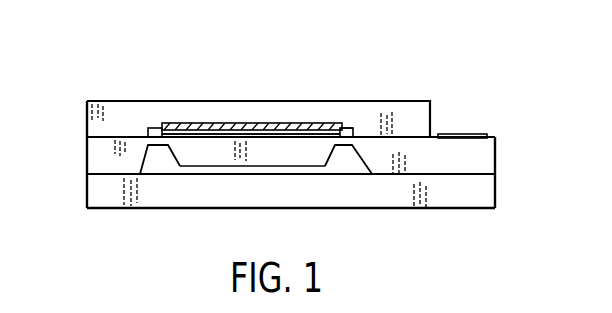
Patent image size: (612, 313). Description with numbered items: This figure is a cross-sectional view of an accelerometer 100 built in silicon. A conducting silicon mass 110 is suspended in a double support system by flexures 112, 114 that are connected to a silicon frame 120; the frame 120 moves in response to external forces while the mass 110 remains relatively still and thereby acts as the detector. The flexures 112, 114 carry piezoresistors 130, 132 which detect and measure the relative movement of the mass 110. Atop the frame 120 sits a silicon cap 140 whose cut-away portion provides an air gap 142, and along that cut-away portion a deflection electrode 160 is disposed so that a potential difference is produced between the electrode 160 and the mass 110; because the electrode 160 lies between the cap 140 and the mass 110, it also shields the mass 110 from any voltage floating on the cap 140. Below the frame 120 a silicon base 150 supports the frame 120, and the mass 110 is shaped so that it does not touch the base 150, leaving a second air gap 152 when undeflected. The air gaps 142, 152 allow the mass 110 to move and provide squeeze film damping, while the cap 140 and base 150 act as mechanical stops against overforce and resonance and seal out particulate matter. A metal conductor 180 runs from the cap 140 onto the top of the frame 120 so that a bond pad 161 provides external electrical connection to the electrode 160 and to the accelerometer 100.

The accelerometer 100 is at (256, 72).
The silicon mass 110 is at (217, 152).
The flexure 112 is at (143, 163).
The flexure 114 is at (343, 148).
The silicon frame 120 is at (484, 157).
The piezoresistor 130 is at (152, 128).
The piezoresistor 132 is at (350, 129).
The silicon cap 140 is at (410, 116).
The air gap 142 is at (197, 122).
The silicon base 150 is at (484, 194).
The second air gap 152 is at (261, 167).
The deflection electrode 160 is at (271, 122).
The bond pad 161 is at (466, 135).
The metal conductor 180 is at (353, 127).